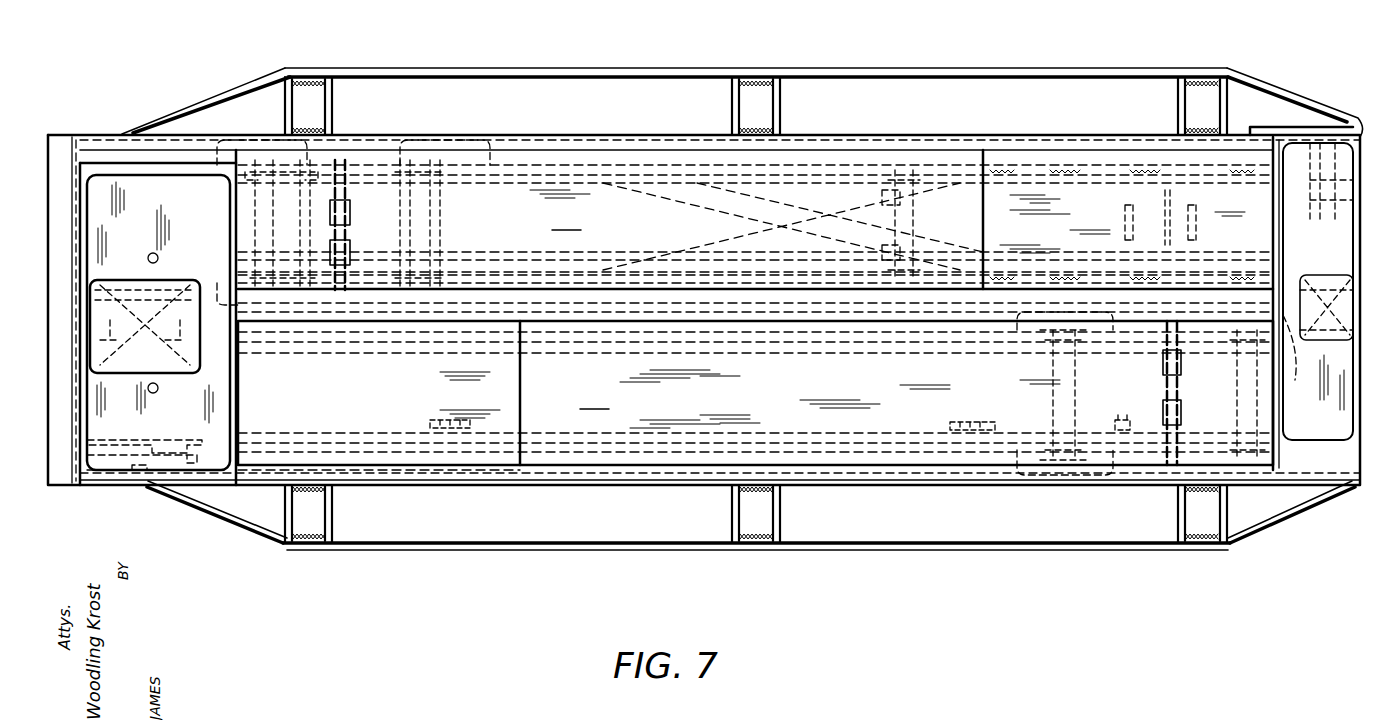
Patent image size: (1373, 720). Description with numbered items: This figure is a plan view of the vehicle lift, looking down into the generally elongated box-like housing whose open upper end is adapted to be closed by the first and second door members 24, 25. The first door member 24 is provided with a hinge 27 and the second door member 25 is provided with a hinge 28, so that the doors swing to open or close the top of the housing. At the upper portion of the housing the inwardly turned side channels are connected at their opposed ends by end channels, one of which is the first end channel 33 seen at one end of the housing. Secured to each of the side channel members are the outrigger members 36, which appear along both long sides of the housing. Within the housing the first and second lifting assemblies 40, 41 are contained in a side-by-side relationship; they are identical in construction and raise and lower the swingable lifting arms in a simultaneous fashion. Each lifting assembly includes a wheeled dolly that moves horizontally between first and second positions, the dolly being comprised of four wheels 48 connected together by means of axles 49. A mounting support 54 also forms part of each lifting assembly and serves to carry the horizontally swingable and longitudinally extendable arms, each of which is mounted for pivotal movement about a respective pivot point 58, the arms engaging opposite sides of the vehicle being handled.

The first door member 24 is at (755, 393).
The second door member 25 is at (755, 231).
The hinge 27 is at (1177, 375).
The hinge 28 is at (362, 216).
The first end channel 33 is at (62, 468).
The outrigger member 36 is at (607, 70).
The first lifting assembly 40 is at (400, 398).
The second lifting assembly 41 is at (682, 222).
The wheel 48 is at (487, 150).
The axle 49 is at (252, 208).
The mounting support 54 is at (215, 390).
The pivot point 58 is at (148, 254).